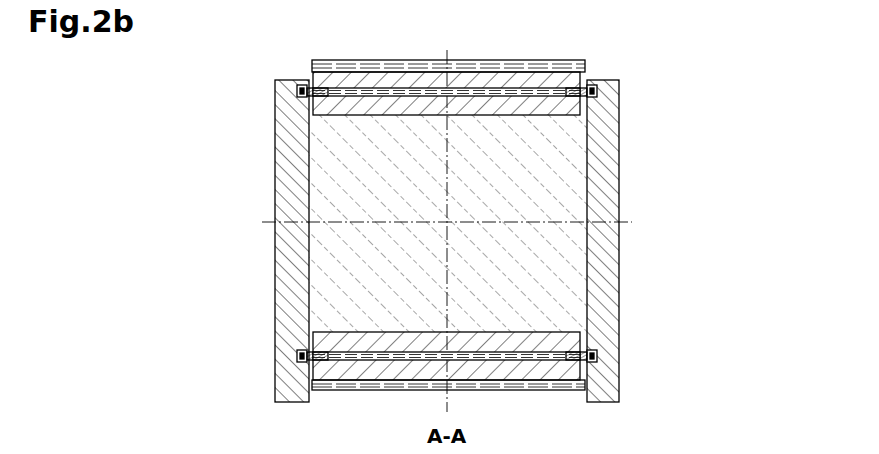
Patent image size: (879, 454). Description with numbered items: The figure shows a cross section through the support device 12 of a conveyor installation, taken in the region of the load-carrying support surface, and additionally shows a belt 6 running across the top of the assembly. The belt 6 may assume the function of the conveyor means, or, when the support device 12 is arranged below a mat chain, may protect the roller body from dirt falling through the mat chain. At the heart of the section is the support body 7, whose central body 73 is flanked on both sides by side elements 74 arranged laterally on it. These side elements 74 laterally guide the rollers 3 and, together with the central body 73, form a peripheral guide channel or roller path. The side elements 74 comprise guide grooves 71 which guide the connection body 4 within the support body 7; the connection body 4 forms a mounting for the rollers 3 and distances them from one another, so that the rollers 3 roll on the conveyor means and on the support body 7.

The support device 12 is at (228, 97).
The belt 6 is at (475, 68).
The rollers 3 is at (568, 80).
The connection body 4 is at (300, 97).
The support body 7 is at (458, 241).
The central body 73 is at (332, 230).
The side elements 74 is at (293, 275).
The guide grooves 71 is at (600, 357).